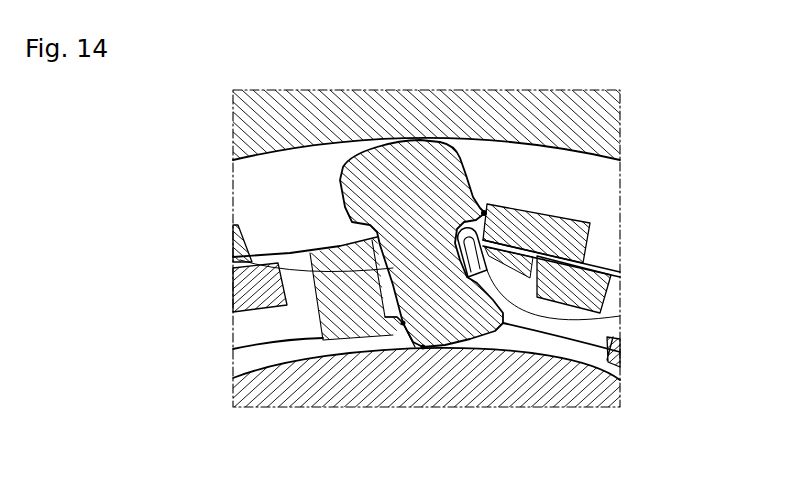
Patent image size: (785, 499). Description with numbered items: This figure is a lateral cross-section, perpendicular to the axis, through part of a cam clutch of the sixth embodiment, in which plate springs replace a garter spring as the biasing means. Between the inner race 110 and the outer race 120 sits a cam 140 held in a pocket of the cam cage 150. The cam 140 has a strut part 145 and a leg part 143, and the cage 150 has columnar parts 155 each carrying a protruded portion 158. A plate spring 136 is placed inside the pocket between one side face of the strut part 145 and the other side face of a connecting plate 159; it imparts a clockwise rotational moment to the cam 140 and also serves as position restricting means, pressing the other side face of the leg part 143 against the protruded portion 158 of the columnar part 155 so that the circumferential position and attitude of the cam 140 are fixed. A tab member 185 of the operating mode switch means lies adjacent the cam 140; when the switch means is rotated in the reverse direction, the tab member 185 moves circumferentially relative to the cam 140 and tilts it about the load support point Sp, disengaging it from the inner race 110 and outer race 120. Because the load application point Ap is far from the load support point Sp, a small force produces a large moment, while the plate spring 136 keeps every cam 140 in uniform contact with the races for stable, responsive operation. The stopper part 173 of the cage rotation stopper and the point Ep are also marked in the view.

The inner race 110 is at (557, 393).
The outer race 120 is at (318, 100).
The plate spring 136 is at (600, 316).
The cam 140 is at (353, 156).
The leg part 143 is at (477, 347).
The strut part 145 is at (233, 257).
The cam cage 150 is at (318, 317).
The columnar part 155 is at (350, 350).
The protruded portion 158 is at (380, 347).
The connecting plate 159 is at (587, 245).
The stopper part 173 is at (593, 287).
The tab member 185 is at (535, 208).
The load application point Ap is at (482, 213).
The load support point Sp is at (420, 340).
The end point Ep is at (423, 347).